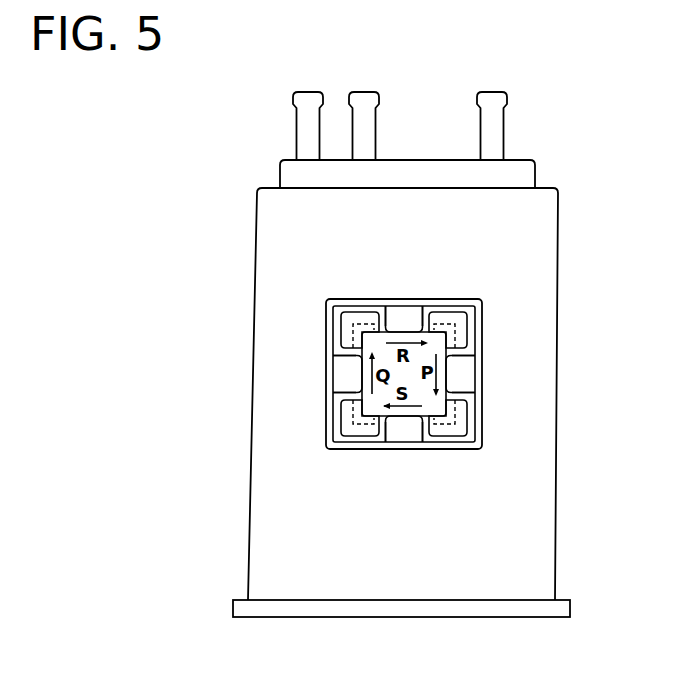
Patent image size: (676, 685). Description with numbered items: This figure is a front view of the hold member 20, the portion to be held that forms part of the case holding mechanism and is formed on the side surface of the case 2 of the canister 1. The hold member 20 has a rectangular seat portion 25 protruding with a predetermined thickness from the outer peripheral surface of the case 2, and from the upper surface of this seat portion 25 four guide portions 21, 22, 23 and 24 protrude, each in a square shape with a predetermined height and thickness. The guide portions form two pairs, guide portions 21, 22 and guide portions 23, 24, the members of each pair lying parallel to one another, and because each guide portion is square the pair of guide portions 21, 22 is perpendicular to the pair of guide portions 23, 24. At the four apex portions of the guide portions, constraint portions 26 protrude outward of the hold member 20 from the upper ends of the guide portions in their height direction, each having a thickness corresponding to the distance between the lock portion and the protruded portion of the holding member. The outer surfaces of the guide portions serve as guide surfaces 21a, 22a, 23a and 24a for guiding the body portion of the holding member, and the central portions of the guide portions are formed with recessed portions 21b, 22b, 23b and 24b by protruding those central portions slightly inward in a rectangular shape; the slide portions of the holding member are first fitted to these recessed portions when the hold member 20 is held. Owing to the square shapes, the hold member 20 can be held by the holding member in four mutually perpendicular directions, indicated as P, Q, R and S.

The canister 1 is at (421, 86).
The case 2 is at (365, 590).
The hold member 20 is at (487, 288).
The guide portion 21 is at (472, 362).
The guide surface 21a is at (470, 374).
The recessed portion 21b is at (470, 382).
The guide portion 22 is at (357, 369).
The guide surface 22a is at (357, 377).
The recessed portion 22b is at (355, 388).
The guide portion 23 is at (413, 322).
The guide surface 23a is at (397, 322).
The recessed portion 23b is at (403, 322).
The guide portion 24 is at (413, 425).
The guide surface 24a is at (395, 425).
The recessed portion 24b is at (405, 425).
The seat portion 25 is at (483, 415).
The constraint portion 26 is at (340, 311).